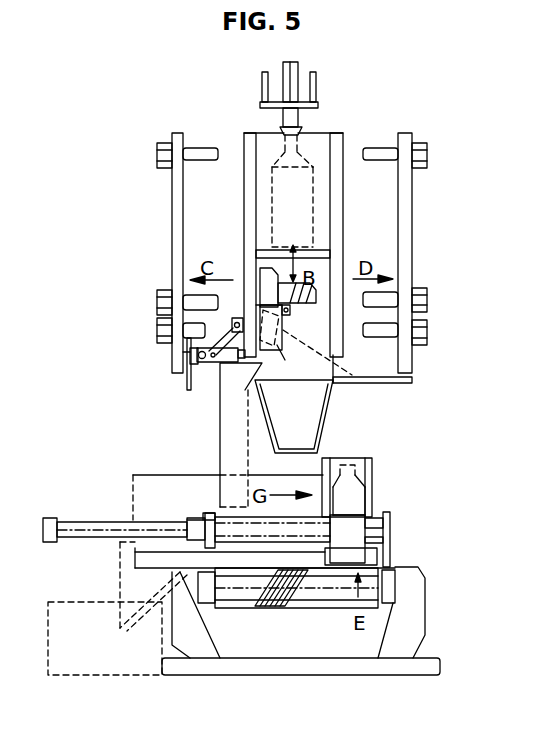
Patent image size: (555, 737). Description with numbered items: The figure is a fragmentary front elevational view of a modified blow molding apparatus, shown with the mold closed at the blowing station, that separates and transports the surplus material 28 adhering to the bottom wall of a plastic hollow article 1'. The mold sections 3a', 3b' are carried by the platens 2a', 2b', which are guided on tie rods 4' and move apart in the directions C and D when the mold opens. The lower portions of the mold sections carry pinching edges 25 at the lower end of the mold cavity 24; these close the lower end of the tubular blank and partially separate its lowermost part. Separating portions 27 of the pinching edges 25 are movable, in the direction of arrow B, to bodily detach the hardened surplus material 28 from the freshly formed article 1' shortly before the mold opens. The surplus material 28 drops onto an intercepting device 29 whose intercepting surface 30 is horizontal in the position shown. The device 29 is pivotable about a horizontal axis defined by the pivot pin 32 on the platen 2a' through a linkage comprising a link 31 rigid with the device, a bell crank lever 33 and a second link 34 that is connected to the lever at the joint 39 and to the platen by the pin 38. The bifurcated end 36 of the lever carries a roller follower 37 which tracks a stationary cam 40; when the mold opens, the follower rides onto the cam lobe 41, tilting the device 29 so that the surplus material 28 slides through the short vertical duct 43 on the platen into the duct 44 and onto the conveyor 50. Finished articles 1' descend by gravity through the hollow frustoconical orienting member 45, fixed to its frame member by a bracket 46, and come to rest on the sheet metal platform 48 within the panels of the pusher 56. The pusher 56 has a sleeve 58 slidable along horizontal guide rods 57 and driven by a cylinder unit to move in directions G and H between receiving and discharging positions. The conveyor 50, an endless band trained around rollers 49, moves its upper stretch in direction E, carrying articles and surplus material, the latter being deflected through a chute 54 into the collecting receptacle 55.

The hollow article 1' is at (391, 488).
The platen 2a' is at (170, 245).
The platen 2b' is at (412, 245).
The mold section 3a' is at (265, 101).
The mold section 3b' is at (333, 113).
The tie rods 4' is at (307, 254).
The mold cavity 24 is at (255, 174).
The pinching edges 25 is at (290, 251).
The separating portions 27 is at (300, 249).
The surplus material 28 is at (305, 254).
The intercepting device 29 is at (308, 300).
The intercepting surface 30 is at (316, 288).
The link 31 is at (363, 384).
The pivot pin 32 is at (288, 314).
The bell crank lever 33 is at (241, 356).
The second link 34 is at (224, 336).
The bifurcated free end 36 is at (226, 360).
The roller follower 37 is at (193, 360).
The pin 38 is at (235, 322).
The articulate connection 39 is at (205, 358).
The stationary cam 40 is at (188, 378).
The cam lobe 41 is at (180, 352).
The short vertical duct 43 is at (277, 345).
The duct 44 is at (233, 442).
The orienting and confining member 45 is at (305, 423).
The bracket 46 is at (399, 384).
The platform 48 is at (248, 567).
The rollers 49 is at (372, 628).
The conveyor 50 is at (303, 608).
The chute 54 is at (160, 592).
The collecting receptacle 55 is at (98, 661).
The pusher 56 is at (360, 472).
The guide rods 57 is at (148, 490).
The sleeve 58 is at (353, 542).